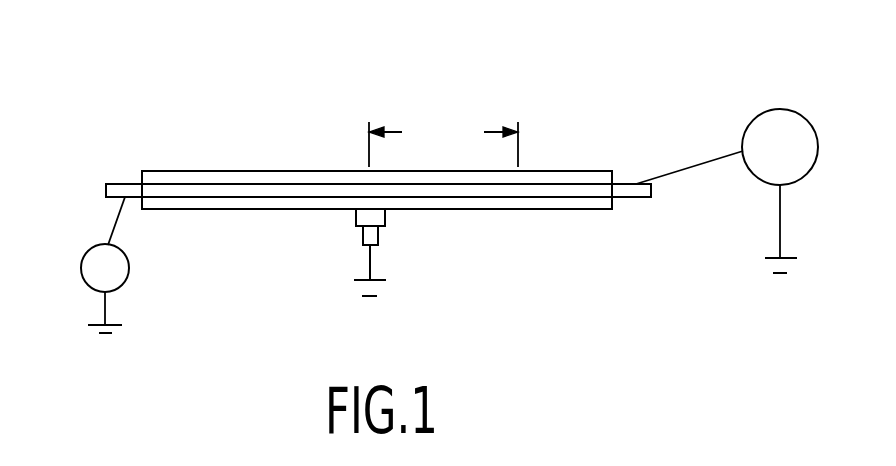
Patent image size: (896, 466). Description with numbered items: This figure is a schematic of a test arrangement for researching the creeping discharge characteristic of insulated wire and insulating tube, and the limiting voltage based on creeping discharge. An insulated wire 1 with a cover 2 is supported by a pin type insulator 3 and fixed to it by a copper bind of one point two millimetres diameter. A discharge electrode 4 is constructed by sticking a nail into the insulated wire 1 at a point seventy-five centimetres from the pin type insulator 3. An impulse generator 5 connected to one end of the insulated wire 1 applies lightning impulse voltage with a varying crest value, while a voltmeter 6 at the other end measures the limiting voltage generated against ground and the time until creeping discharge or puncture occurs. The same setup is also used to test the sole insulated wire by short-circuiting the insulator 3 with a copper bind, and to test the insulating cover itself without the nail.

The insulated wire 1 is at (208, 192).
The cover 2 is at (310, 171).
The pin type insulator 3 is at (356, 218).
The discharge electrode 4 is at (493, 178).
The impulse generator 5 is at (810, 122).
The voltmeter 6 is at (81, 271).